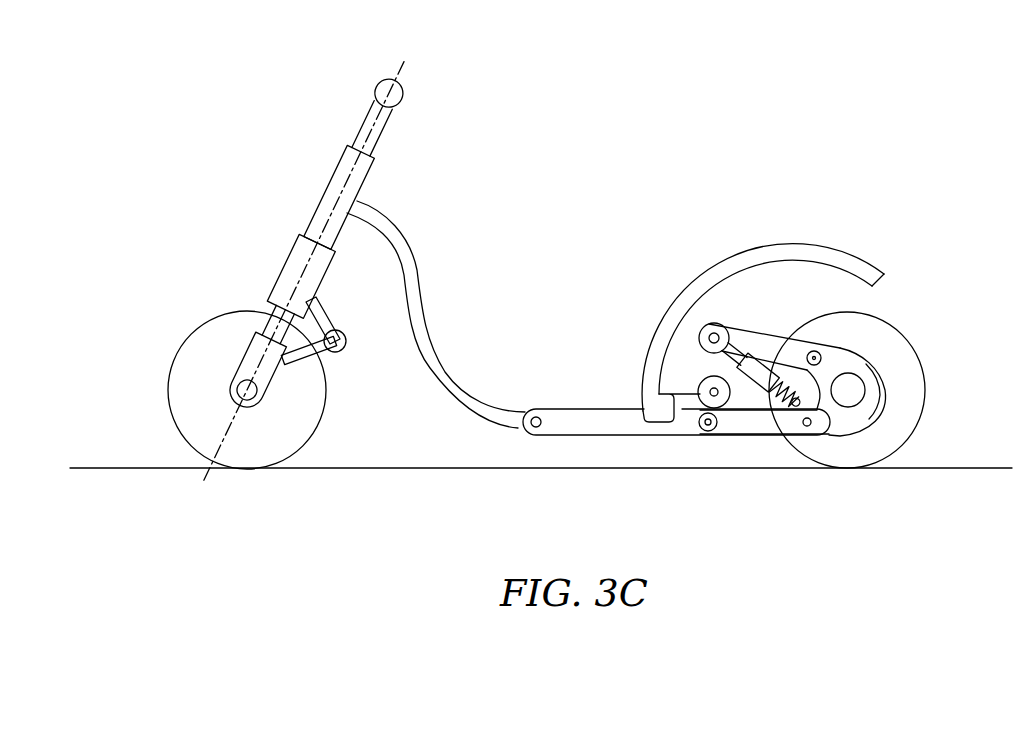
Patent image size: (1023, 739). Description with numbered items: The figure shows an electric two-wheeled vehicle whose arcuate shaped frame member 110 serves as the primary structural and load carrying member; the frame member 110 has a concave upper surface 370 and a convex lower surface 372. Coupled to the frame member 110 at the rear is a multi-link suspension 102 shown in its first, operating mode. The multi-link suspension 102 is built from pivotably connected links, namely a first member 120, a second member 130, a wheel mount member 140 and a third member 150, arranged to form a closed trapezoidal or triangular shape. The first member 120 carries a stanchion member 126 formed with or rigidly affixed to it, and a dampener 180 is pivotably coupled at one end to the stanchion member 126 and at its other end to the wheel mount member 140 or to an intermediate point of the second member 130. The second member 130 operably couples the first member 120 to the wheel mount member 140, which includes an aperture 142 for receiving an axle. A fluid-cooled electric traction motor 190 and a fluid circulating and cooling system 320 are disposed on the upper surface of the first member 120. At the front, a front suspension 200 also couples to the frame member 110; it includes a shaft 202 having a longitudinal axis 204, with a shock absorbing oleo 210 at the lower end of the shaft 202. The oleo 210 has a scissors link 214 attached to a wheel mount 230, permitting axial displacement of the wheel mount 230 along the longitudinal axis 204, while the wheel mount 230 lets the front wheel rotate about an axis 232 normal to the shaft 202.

The multi-link suspension 102 is at (564, 470).
The frame member 110 is at (862, 251).
The first member 120 is at (608, 429).
The stanchion member 126 is at (690, 372).
The second member 130 is at (784, 428).
The wheel mount member 140 is at (864, 370).
The aperture 142 is at (848, 390).
The third member 150 is at (750, 344).
The dampener 180 is at (758, 367).
The fluid-cooled electric traction motor 190 is at (698, 390).
The front suspension 200 is at (426, 122).
The shaft 202 is at (388, 133).
The longitudinal axis 204 is at (398, 67).
The shock absorbing oleo 210 is at (273, 280).
The scissors link 214 is at (325, 310).
The wheel mount 230 is at (244, 357).
The axis 232 is at (234, 391).
The fluid circulating and cooling system 320 is at (322, 190).
The concave upper surface 370 is at (428, 313).
The convex lower surface 372 is at (455, 401).